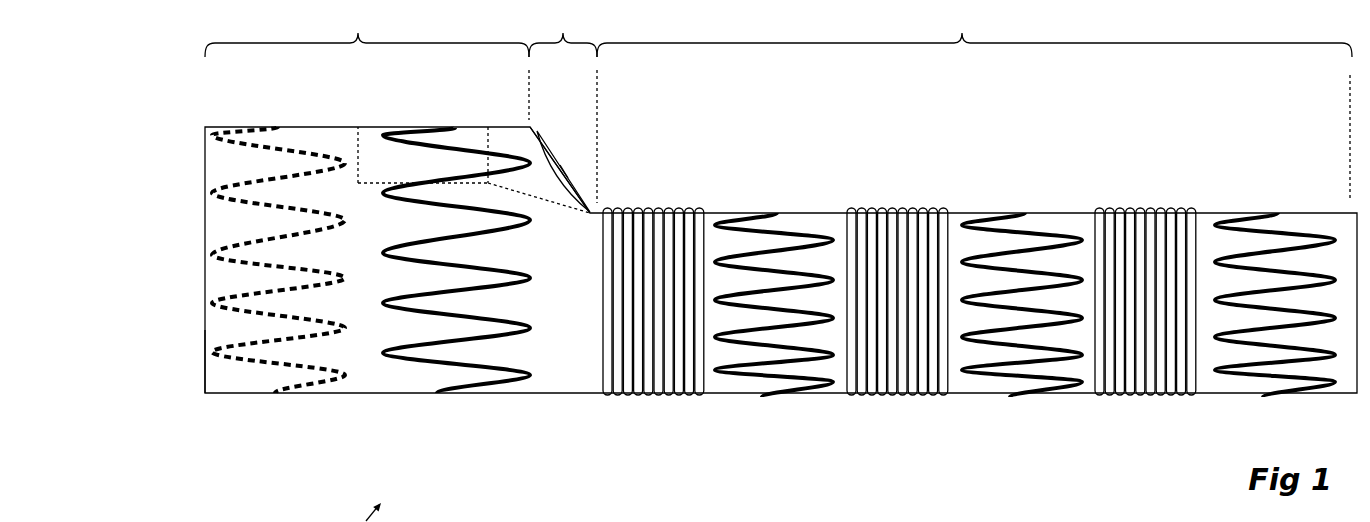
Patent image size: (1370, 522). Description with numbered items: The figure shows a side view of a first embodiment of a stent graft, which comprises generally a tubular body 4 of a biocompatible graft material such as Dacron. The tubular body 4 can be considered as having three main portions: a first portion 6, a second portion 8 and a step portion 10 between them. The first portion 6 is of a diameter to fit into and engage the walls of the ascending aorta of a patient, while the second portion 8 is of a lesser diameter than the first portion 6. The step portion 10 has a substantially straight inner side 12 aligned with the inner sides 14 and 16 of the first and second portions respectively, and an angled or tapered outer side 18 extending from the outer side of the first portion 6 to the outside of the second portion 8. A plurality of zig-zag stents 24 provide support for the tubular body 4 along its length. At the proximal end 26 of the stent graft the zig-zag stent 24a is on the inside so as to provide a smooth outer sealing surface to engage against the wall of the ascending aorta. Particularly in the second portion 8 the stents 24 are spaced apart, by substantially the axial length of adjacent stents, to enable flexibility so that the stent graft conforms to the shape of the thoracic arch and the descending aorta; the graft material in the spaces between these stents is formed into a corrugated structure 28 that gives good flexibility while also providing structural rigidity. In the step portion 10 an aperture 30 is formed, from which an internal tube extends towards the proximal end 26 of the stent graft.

The tubular body 4 is at (590, 345).
The first portion 6 is at (367, 31).
The second portion 8 is at (974, 102).
The step portion 10 is at (563, 104).
The inner side of step portion 12 is at (555, 393).
The inner side of first portion 14 is at (370, 395).
The inner side of second portion 16 is at (725, 395).
The tapered outer side 18 is at (537, 133).
The zig-zag stents 24 is at (778, 360).
The zig-zag stent at proximal end 24a is at (290, 365).
The proximal end 26 is at (181, 357).
The corrugated structure 28 is at (897, 362).
The aperture 30 is at (565, 172).